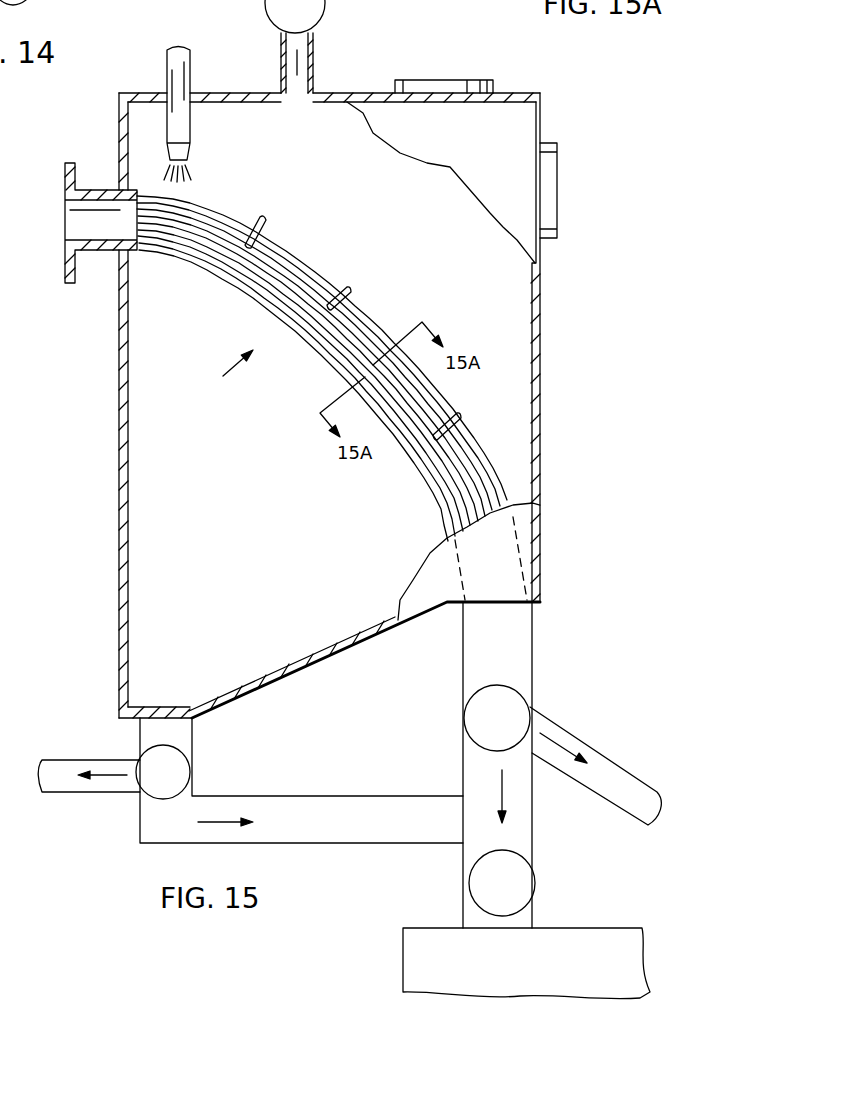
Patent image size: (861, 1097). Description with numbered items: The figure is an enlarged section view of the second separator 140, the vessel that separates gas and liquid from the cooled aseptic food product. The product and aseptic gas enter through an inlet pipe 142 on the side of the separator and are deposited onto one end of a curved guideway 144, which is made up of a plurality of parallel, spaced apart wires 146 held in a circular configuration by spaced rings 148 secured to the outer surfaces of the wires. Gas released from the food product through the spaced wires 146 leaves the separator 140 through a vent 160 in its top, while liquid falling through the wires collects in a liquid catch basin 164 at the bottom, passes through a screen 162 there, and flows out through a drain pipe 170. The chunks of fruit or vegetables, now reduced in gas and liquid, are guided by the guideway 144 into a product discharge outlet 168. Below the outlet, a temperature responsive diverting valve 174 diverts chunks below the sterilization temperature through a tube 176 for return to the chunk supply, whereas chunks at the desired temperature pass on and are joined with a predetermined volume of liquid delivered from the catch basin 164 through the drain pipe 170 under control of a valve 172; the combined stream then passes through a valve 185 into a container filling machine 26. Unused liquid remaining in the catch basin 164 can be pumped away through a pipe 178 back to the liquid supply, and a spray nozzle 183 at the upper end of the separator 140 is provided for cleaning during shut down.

The container filling machine 26 is at (420, 946).
The second separator 140 is at (302, 399).
The inlet pipe 142 is at (82, 283).
The curved guideway 144 is at (220, 374).
The wires 146 is at (217, 212).
The rings 148 is at (265, 217).
The vent 160 is at (325, 12).
The screen 162 is at (163, 707).
The liquid catch basin 164 is at (121, 628).
The product discharge outlet 168 is at (531, 645).
The drain pipe 170 is at (193, 735).
The valve 172 is at (183, 770).
The temperature responsive diverting valve 174 is at (473, 710).
The tube 176 is at (580, 760).
The pipe 178 is at (75, 758).
The spray nozzle 183 is at (192, 120).
The valve 185 is at (478, 876).